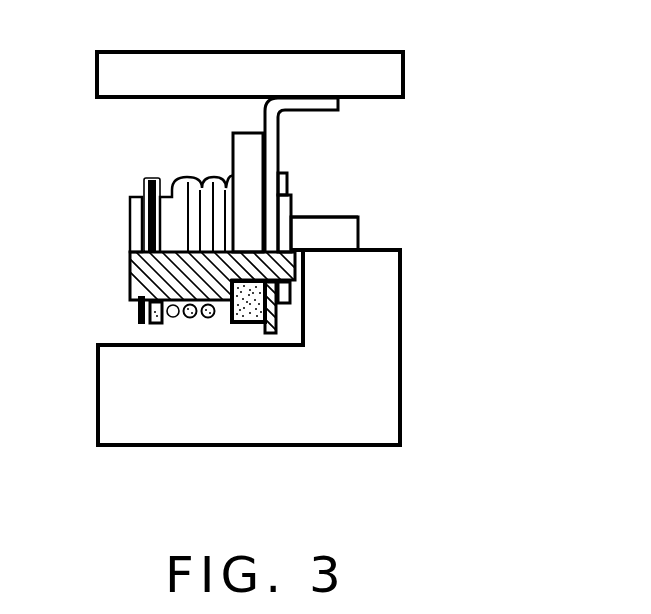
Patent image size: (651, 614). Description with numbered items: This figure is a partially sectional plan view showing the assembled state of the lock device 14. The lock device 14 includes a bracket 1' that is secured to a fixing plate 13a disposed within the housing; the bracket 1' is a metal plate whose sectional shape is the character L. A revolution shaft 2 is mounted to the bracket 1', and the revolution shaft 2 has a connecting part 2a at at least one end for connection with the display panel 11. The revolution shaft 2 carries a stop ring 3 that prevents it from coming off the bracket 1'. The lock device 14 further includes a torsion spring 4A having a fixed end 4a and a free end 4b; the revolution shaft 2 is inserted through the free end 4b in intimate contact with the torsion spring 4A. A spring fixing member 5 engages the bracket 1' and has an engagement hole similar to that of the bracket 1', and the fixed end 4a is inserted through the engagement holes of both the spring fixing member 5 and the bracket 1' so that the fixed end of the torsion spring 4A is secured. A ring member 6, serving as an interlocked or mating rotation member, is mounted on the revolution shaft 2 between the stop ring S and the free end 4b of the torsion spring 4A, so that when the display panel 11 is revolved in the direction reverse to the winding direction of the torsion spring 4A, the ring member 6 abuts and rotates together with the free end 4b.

The lock device 14 is at (412, 68).
The fixing plate 13a is at (205, 51).
The bracket 1' is at (360, 174).
The fixed end 4a is at (286, 188).
The revolution shaft 2 is at (328, 207).
The connecting part 2a is at (358, 230).
The display panel 11 is at (401, 338).
The stop ring 3 is at (284, 303).
The spring fixing member 5 is at (245, 322).
The free end 4b is at (173, 317).
The stop ring S is at (140, 188).
The ring member 6 is at (152, 176).
The torsion spring 4A is at (192, 167).